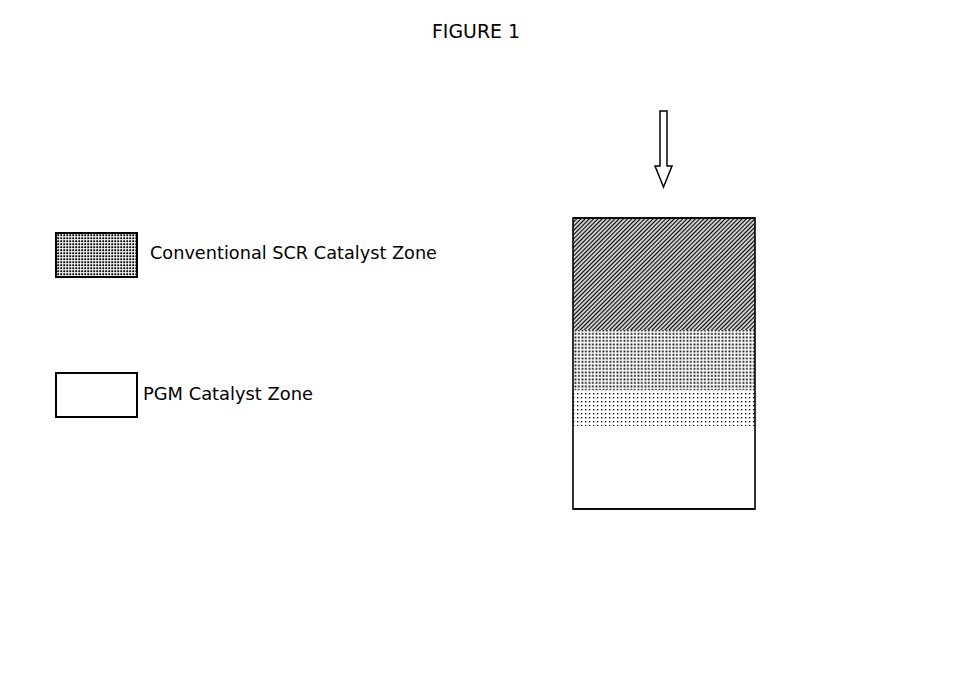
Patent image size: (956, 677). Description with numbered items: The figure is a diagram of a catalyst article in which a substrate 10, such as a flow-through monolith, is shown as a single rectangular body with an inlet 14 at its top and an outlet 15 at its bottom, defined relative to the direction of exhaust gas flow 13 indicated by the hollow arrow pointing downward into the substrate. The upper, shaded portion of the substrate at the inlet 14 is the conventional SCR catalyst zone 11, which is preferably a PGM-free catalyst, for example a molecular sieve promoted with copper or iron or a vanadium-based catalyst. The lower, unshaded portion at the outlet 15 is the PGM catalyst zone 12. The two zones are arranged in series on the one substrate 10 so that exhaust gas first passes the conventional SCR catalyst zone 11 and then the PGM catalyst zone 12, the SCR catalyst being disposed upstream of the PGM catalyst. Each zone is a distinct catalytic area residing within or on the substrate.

The substrate 10 is at (665, 358).
The conventional SCR catalyst zone 11 is at (683, 247).
The PGM catalyst zone 12 is at (698, 476).
The direction of exhaust gas flow 13 is at (663, 138).
The inlet 14 is at (652, 239).
The outlet 15 is at (647, 483).